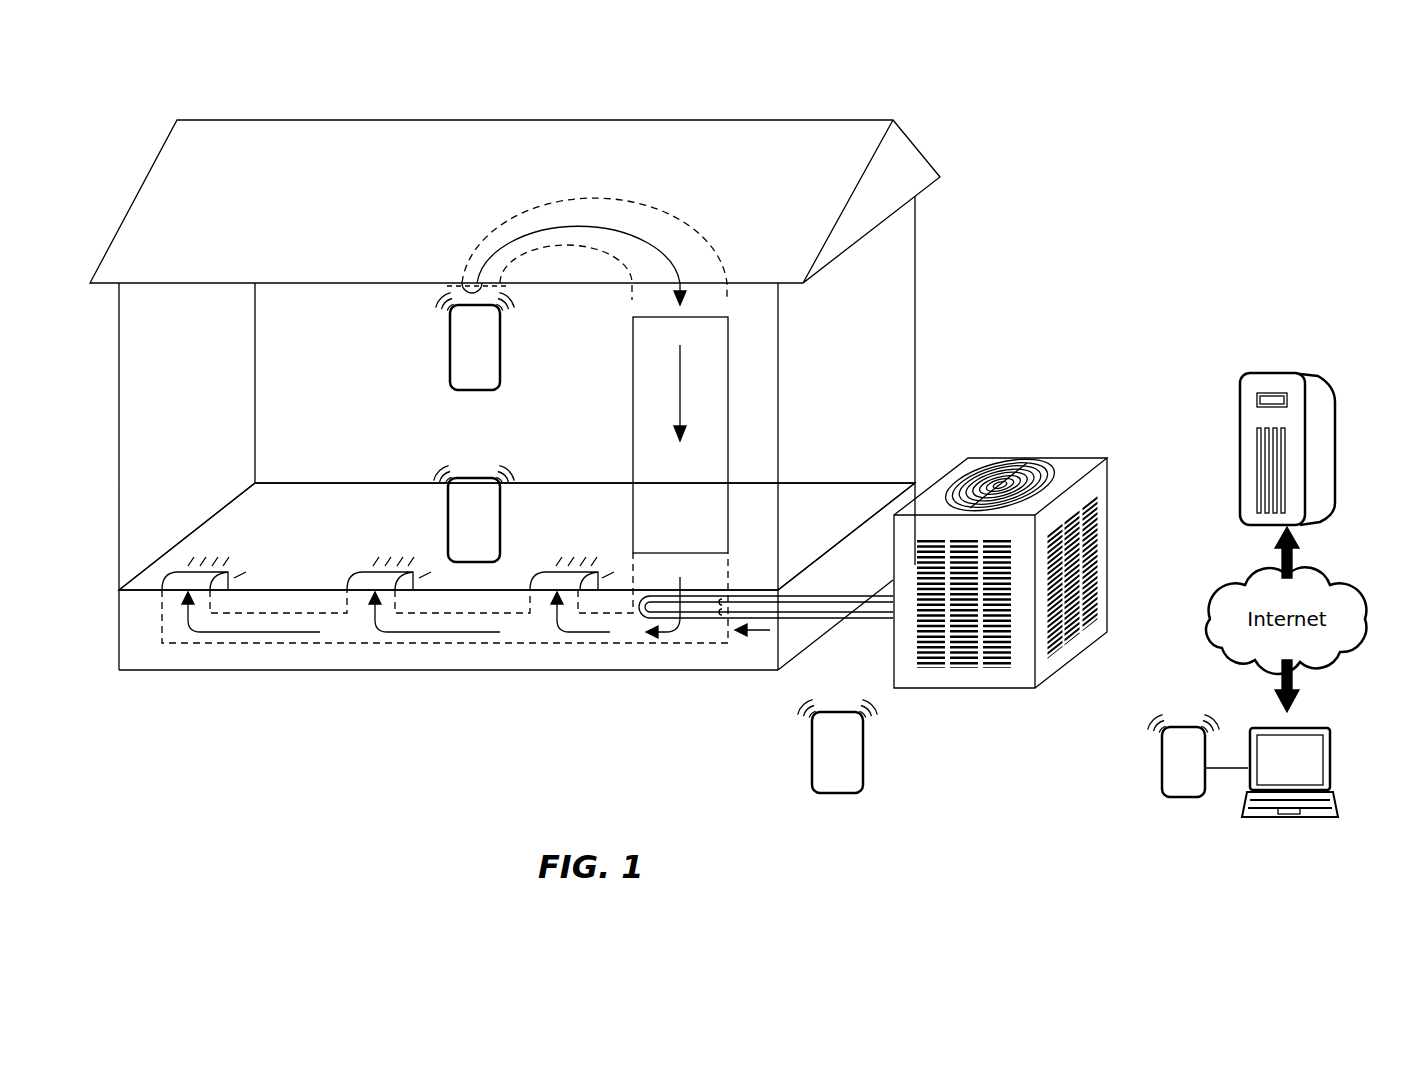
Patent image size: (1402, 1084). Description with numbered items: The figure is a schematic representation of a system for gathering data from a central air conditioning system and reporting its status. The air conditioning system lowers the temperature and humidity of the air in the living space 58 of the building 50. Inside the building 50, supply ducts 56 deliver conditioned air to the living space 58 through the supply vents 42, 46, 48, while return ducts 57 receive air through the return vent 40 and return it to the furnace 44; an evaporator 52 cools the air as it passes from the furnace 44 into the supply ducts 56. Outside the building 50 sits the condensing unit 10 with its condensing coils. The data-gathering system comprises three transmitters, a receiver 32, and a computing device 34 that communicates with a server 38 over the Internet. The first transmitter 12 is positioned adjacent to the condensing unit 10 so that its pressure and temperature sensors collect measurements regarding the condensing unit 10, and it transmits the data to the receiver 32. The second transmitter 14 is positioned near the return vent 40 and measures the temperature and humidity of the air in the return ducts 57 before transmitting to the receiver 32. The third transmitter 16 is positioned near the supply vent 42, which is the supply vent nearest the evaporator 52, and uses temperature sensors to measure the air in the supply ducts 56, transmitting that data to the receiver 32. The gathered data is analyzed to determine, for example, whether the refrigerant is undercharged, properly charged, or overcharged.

The condensing unit 10 is at (1067, 462).
The first transmitter 12 is at (826, 764).
The second transmitter 14 is at (462, 359).
The third transmitter 16 is at (462, 530).
The receiver 32 is at (1171, 770).
The computing device 34 is at (1275, 772).
The server 38 is at (1240, 448).
The return vent 40 is at (462, 278).
The supply vent 42 is at (546, 582).
The furnace 44 is at (668, 525).
The supply vent 46 is at (362, 572).
The supply vent 48 is at (233, 568).
The building 50 is at (301, 209).
The evaporator 52 is at (695, 597).
The supply ducts 56 is at (383, 645).
The return ducts 57 is at (658, 196).
The living space 58 is at (291, 515).